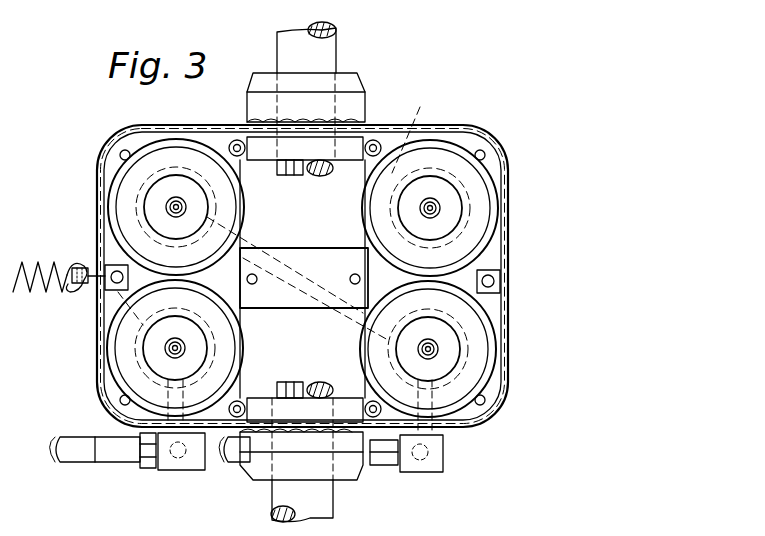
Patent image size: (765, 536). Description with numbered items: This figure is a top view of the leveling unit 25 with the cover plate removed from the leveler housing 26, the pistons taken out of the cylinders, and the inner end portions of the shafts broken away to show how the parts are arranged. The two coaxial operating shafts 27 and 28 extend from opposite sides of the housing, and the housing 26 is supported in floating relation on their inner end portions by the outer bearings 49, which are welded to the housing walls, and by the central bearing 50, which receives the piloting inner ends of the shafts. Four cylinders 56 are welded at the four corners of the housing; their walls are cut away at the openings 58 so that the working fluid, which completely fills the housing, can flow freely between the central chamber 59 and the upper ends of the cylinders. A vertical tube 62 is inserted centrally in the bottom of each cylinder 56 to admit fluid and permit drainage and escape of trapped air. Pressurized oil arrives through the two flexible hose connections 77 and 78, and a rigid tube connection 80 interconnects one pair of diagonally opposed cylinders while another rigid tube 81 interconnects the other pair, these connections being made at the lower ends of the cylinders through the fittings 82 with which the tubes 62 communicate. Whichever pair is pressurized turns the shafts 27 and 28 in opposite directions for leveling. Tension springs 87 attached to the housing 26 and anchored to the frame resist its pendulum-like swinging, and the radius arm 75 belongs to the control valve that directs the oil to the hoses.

The leveling unit 25 is at (108, 153).
The leveler housing 26 is at (100, 356).
The operating shaft 27 is at (320, 53).
The operating shaft 28 is at (322, 504).
The bearing 49 is at (360, 100).
The central bearing 50 is at (292, 305).
The cylinder 56 is at (93, 262).
The opening 58 is at (364, 208).
The central chamber 59 is at (306, 234).
The vertical tube 62 is at (166, 207).
The radius arm 75 is at (512, 535).
The flexible hose connection 77 is at (100, 456).
The flexible hose connection 78 is at (228, 460).
The rigid tube connection 80 is at (297, 270).
The rigid tube 81 is at (421, 140).
The fitting 82 is at (468, 207).
The tension spring 87 is at (40, 293).